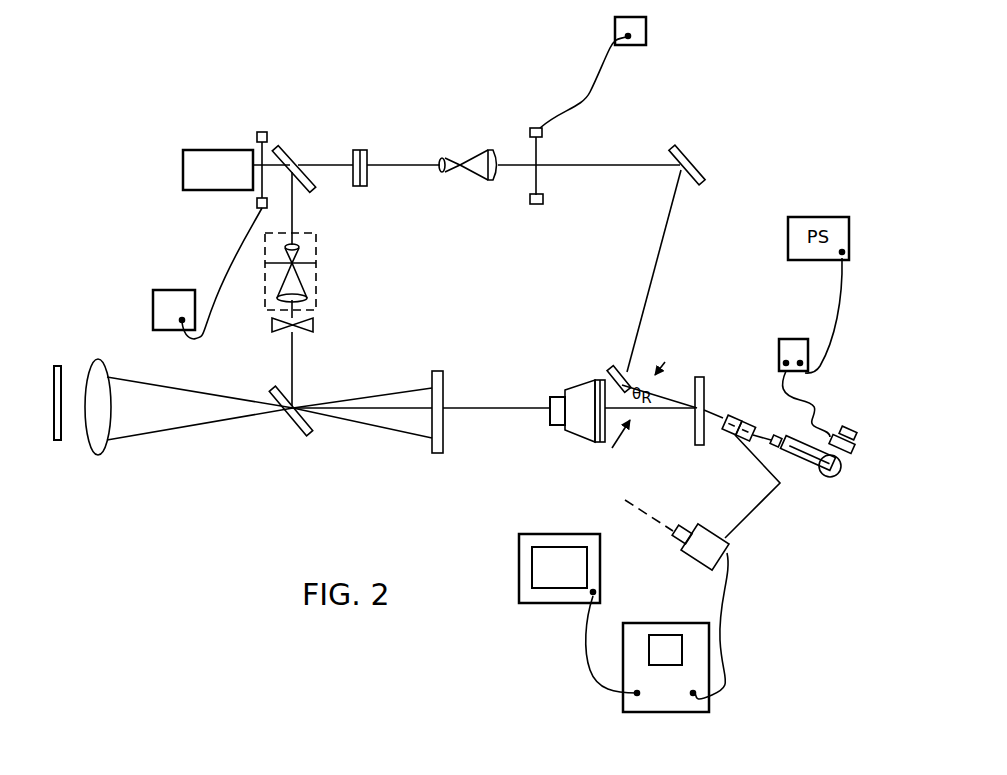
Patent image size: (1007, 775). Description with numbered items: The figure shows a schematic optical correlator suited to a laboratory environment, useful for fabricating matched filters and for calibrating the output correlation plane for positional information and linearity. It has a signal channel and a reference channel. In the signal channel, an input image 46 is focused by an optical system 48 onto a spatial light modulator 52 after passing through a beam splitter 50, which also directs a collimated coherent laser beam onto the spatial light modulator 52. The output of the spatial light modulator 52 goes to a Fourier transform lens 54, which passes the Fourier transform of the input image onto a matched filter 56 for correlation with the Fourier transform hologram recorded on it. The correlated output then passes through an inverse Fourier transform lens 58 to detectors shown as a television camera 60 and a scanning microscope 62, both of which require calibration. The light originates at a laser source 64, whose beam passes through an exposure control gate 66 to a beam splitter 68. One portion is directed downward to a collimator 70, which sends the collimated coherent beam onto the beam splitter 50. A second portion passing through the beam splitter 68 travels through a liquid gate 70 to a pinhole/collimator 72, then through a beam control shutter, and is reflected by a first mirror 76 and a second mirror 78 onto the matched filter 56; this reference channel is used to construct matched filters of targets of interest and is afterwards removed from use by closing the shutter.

The input image 46 is at (58, 445).
The optical system 48 is at (105, 370).
The beam splitter 50 is at (288, 431).
The spatial light modulator 52 is at (443, 383).
The Fourier transform lens 54 is at (587, 437).
The matched filter 56 is at (705, 391).
The inverse Fourier transform lens 58 is at (728, 433).
The television camera 60 is at (728, 552).
The scanning microscope 62 is at (838, 476).
The laser source 64 is at (183, 170).
The exposure control gate 66 is at (260, 146).
The beam splitter 68 is at (291, 158).
The collimator / liquid gate 70 is at (316, 253).
The pinhole/collimator 72 is at (484, 150).
The first mirror 76 is at (696, 157).
The second mirror 78 is at (611, 372).